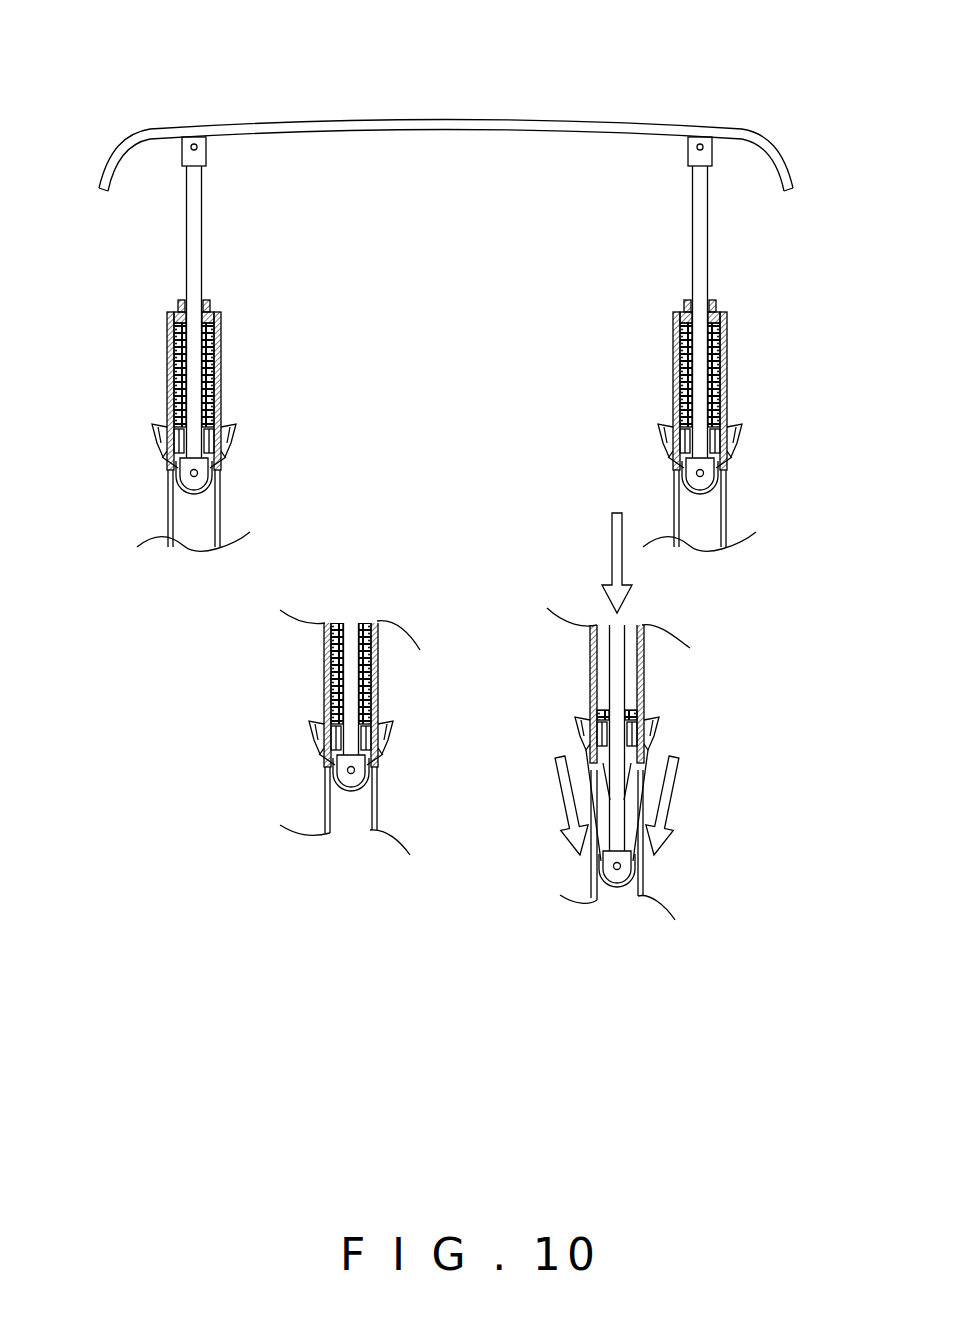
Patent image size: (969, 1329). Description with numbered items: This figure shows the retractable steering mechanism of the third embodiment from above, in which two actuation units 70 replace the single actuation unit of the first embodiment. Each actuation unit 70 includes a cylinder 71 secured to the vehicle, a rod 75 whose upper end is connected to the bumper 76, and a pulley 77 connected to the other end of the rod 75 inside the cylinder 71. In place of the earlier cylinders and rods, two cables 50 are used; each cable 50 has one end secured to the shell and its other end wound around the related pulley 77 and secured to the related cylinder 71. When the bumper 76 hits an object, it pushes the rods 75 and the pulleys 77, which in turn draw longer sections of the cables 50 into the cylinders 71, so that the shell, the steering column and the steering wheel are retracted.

The bumper 76 is at (456, 124).
The rod 75 is at (202, 266).
The actuation unit 70 is at (236, 339).
The cylinder 71 is at (221, 388).
The pulley 77 is at (166, 473).
The cable 50 is at (206, 484).